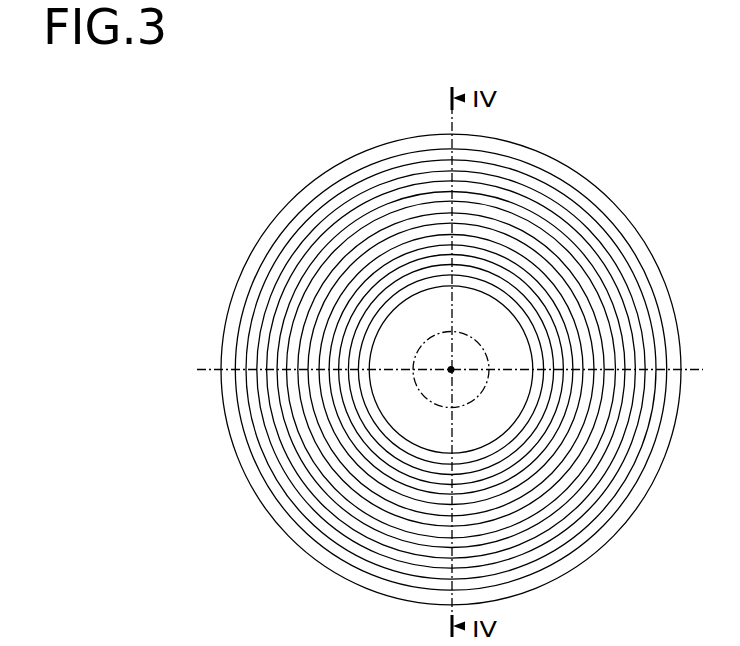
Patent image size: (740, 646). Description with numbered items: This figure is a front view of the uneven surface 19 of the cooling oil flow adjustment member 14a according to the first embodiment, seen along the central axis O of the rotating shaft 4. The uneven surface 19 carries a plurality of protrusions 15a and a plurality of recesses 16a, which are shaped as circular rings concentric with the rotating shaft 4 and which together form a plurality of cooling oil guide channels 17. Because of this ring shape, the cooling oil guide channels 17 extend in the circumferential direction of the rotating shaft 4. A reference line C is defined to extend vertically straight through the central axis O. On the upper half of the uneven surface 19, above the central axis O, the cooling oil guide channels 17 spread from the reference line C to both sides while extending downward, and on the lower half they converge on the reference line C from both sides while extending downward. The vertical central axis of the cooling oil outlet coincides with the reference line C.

The rotating shaft 4 is at (424, 396).
The cooling oil flow adjustment member 14a is at (602, 191).
The protrusions 15a is at (305, 227).
The recesses 16a is at (333, 187).
The cooling oil guide channels 17 is at (450, 345).
The uneven surface 19 is at (342, 86).
The reference line C is at (453, 126).
The central axis O is at (460, 358).